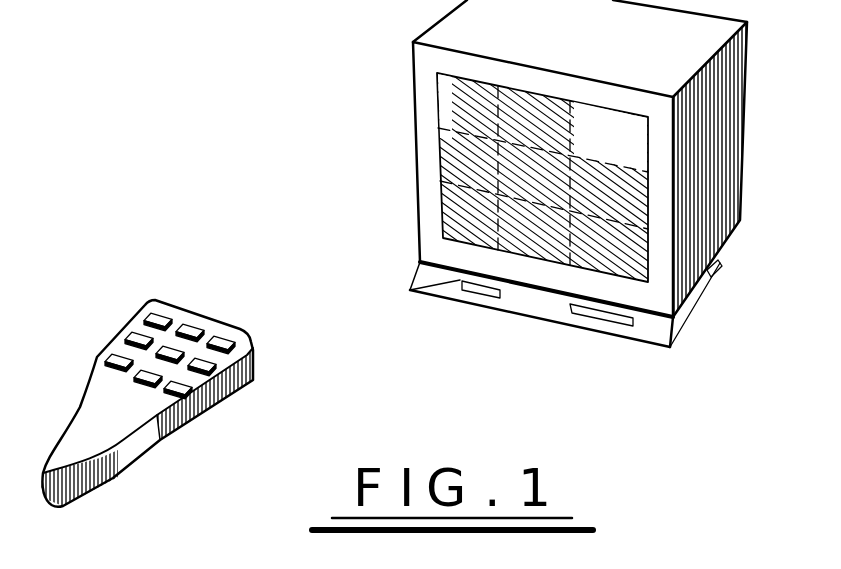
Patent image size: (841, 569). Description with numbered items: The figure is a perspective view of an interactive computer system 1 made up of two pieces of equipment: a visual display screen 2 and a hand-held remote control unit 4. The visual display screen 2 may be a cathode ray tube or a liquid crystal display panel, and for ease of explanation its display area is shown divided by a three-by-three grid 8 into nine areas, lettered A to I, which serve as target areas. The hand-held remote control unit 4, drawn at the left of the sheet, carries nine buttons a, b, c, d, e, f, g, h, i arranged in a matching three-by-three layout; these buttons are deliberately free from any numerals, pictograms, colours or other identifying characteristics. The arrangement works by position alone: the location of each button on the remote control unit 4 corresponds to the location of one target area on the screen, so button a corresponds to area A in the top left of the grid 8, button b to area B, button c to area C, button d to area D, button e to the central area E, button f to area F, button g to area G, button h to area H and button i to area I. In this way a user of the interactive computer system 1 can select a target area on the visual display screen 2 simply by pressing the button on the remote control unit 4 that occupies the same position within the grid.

The interactive computer system 1 is at (340, 190).
The visual display screen 2 is at (687, 237).
The hand-held remote control unit 4 is at (201, 422).
The 3×3 grid 8 is at (553, 240).
The button a is at (158, 318).
The button b is at (192, 329).
The button c is at (224, 341).
The button d is at (138, 337).
The button e is at (169, 352).
The button f is at (205, 367).
The button g is at (112, 358).
The button h is at (148, 379).
The button i is at (178, 390).